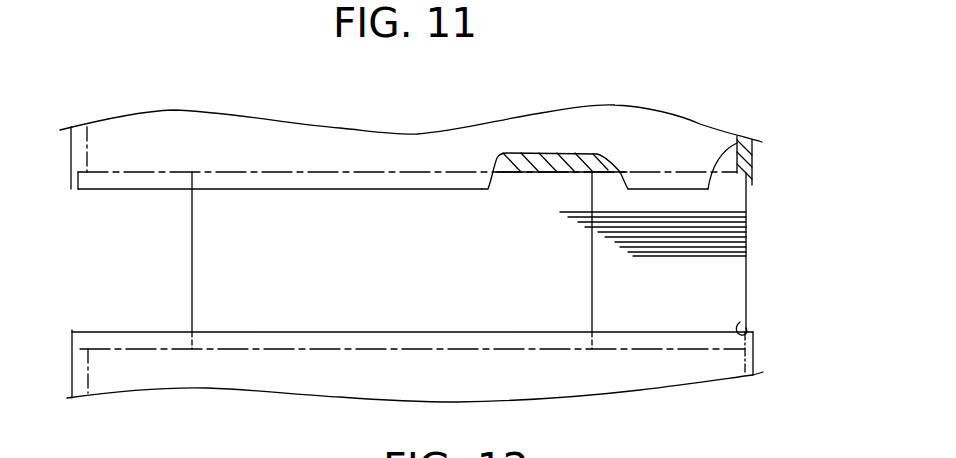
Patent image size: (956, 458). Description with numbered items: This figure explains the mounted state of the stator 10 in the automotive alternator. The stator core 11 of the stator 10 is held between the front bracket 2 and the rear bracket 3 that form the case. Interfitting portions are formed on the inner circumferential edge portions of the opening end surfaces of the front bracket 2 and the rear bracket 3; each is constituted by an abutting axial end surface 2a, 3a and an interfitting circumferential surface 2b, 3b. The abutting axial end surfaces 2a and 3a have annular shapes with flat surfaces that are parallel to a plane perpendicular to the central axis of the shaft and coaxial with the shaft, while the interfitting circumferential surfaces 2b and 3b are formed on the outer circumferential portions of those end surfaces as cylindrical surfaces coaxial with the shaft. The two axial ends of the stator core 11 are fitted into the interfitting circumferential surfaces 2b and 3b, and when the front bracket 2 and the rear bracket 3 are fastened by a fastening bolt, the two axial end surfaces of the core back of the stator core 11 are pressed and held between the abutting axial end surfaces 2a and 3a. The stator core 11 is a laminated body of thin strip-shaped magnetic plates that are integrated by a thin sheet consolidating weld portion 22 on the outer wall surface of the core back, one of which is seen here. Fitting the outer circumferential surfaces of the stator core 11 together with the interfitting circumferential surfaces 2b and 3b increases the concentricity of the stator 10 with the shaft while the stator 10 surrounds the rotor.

The front bracket 2 is at (147, 124).
The abutting axial end surface 2a is at (566, 173).
The interfitting circumferential surface 2b is at (743, 181).
The rear bracket 3 is at (173, 372).
The abutting axial end surface 3a is at (739, 348).
The interfitting circumferential surface 3b is at (746, 326).
The stator 10 is at (752, 233).
The stator core 11 is at (740, 287).
The thin sheet consolidating weld portion 22 is at (195, 293).